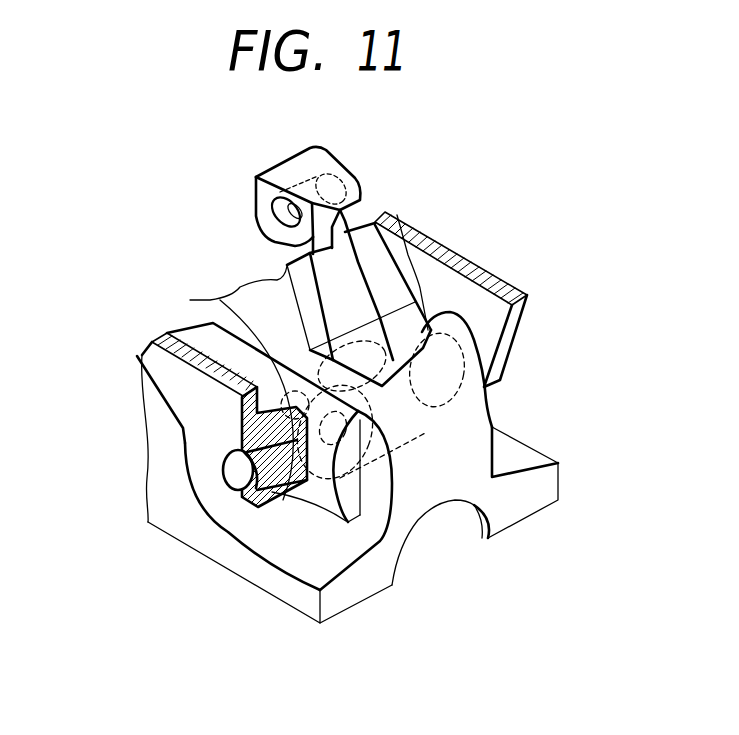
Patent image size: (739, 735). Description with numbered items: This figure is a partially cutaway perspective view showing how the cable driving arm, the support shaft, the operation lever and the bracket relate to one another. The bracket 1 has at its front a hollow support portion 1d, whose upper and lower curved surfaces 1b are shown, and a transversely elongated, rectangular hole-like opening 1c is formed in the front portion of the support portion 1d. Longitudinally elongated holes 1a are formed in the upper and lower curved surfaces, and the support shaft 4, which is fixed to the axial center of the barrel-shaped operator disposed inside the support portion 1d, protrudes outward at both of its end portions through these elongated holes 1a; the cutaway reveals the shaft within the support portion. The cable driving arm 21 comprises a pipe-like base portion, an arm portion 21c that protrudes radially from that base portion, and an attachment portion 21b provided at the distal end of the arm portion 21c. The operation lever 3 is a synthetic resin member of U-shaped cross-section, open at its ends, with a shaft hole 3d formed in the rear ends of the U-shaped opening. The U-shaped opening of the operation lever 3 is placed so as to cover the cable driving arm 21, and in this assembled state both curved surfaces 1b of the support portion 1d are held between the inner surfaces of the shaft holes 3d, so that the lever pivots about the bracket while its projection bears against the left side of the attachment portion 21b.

The bracket 1 is at (513, 503).
The elongated holes 1a is at (226, 304).
The curved surfaces 1b is at (327, 480).
The opening 1c is at (440, 331).
The support portion 1d is at (437, 463).
The operation lever 3 is at (503, 357).
The shaft hole 3d is at (263, 478).
The support shaft 4 is at (240, 481).
The cable driving arm 21 is at (388, 303).
The attachment portion 21b is at (282, 212).
The arm portion 21c is at (355, 281).